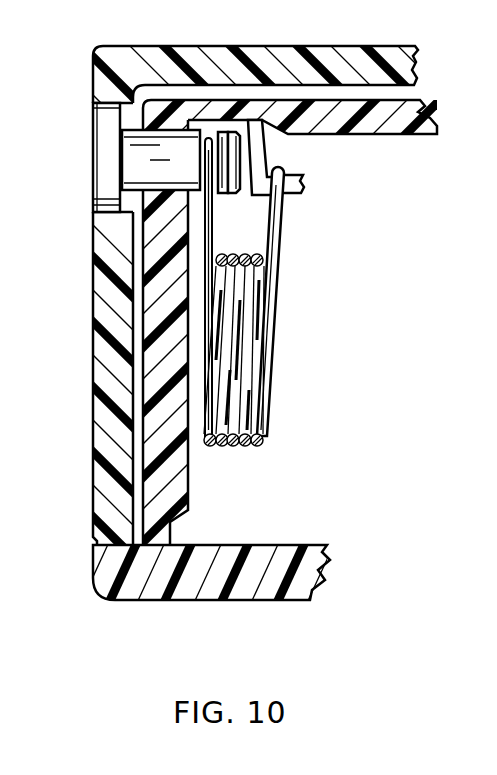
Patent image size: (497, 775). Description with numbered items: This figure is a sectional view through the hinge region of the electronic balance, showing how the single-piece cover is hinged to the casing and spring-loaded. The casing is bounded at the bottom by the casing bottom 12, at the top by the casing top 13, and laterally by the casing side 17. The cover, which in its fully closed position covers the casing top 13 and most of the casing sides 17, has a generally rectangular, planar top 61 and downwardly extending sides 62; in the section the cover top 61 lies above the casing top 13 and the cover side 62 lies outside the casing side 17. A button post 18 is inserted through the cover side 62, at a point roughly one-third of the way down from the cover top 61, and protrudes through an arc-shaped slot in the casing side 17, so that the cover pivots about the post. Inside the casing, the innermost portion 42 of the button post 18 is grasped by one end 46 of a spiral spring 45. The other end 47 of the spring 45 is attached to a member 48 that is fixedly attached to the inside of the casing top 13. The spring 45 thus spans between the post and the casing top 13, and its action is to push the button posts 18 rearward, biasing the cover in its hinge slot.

The casing bottom 12 is at (183, 588).
The casing top 13 is at (374, 127).
The casing side 17 is at (172, 465).
The button post 18 is at (101, 182).
The innermost portion of the button post 42 is at (230, 189).
The spiral spring 45 is at (258, 443).
The spring end 46 is at (212, 208).
The other spring end 47 is at (282, 205).
The member 48 is at (267, 158).
The cover top 61 is at (279, 51).
The cover side 62 is at (96, 340).